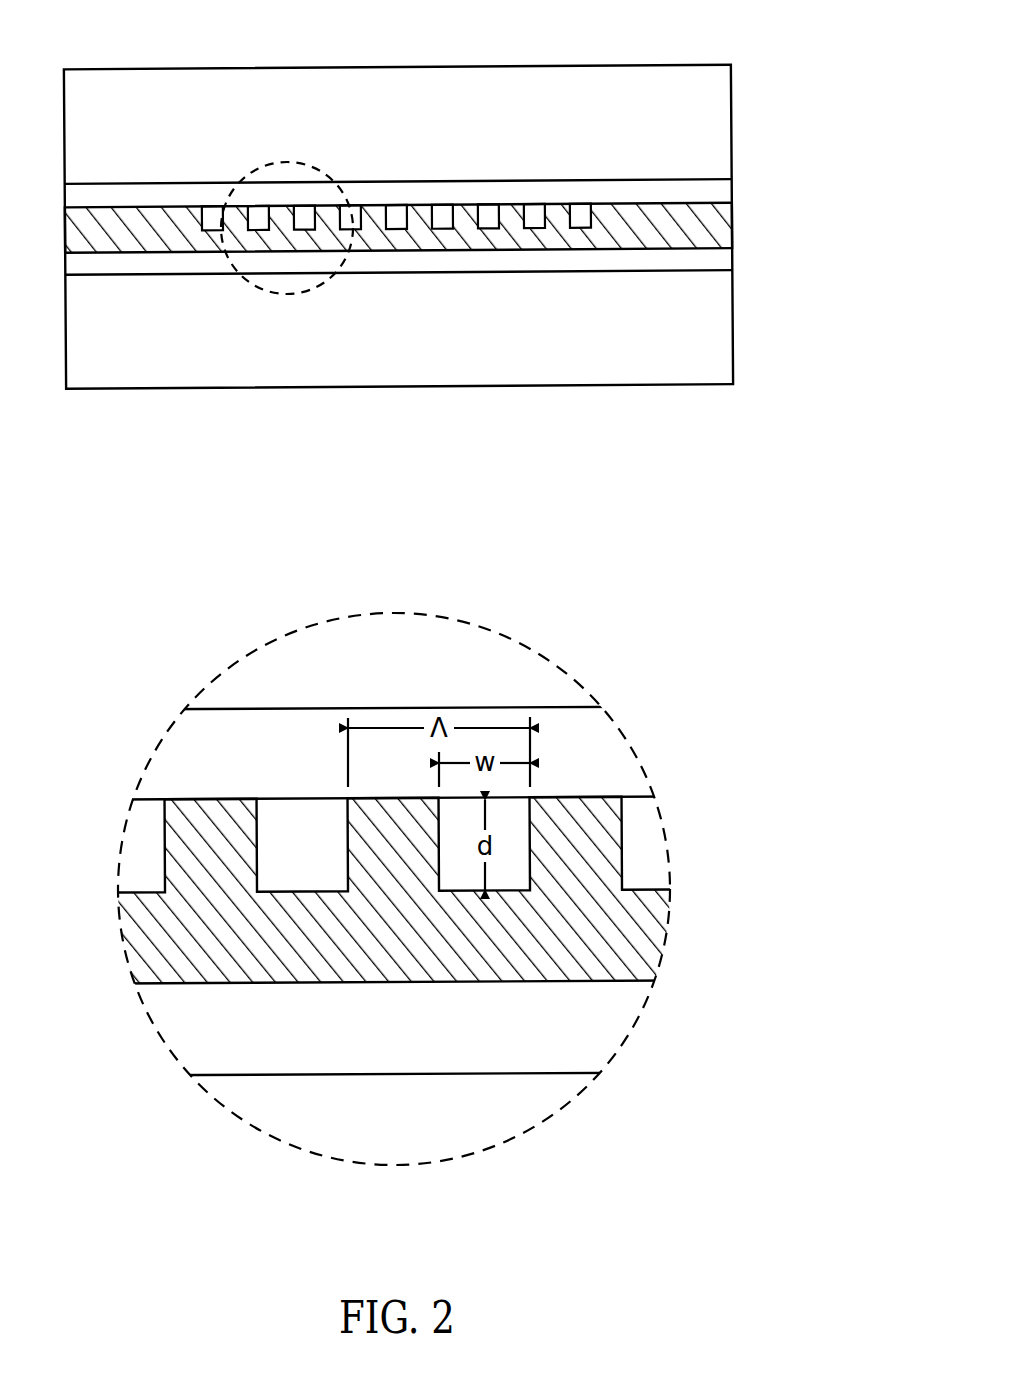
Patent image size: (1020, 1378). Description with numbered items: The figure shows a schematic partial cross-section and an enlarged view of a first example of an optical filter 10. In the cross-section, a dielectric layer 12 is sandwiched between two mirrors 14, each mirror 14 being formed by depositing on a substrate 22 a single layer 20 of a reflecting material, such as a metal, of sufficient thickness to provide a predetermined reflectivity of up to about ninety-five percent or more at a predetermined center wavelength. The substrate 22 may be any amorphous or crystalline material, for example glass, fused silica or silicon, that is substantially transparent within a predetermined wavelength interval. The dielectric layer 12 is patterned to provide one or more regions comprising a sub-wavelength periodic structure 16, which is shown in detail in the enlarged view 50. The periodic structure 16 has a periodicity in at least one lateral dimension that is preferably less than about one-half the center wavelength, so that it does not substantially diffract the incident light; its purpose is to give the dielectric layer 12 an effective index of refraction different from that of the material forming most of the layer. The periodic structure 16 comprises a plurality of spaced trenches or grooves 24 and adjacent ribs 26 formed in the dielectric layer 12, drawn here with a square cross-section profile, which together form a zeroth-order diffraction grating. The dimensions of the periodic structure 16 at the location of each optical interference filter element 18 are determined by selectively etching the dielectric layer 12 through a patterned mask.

The optical filter 10 is at (710, 407).
The dielectric layer 12 is at (476, 492).
The mirror 14 is at (823, 63).
The sub-wavelength periodic structure 16 is at (678, 797).
The optical interference filter element 18 is at (202, 48).
The single layer of reflecting material 20 is at (720, 193).
The substrate 22 is at (582, 139).
The trenches or grooves 24 is at (302, 822).
The ribs 26 is at (210, 823).
The enlarged view 50 is at (243, 173).